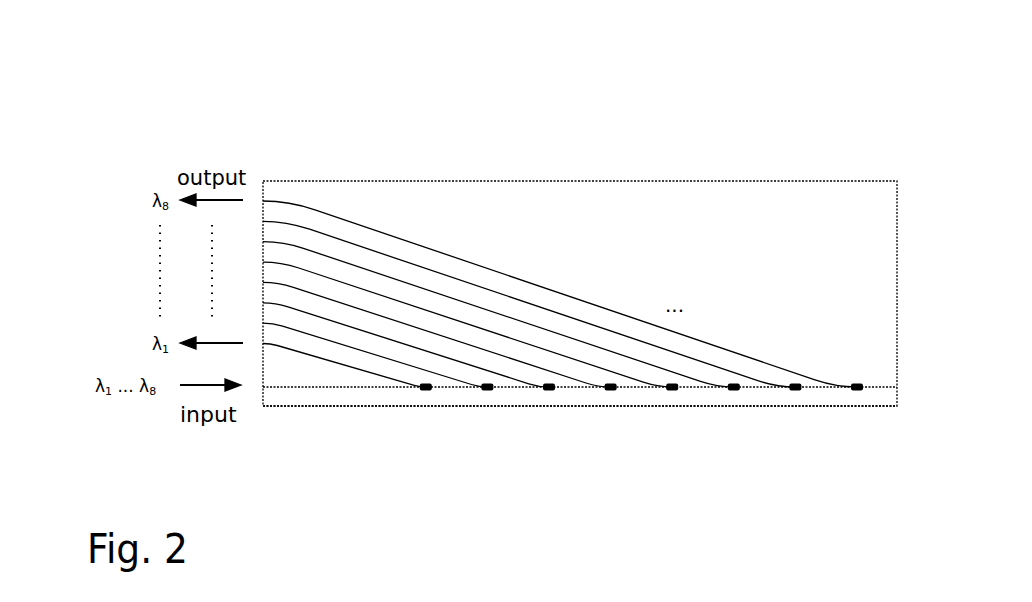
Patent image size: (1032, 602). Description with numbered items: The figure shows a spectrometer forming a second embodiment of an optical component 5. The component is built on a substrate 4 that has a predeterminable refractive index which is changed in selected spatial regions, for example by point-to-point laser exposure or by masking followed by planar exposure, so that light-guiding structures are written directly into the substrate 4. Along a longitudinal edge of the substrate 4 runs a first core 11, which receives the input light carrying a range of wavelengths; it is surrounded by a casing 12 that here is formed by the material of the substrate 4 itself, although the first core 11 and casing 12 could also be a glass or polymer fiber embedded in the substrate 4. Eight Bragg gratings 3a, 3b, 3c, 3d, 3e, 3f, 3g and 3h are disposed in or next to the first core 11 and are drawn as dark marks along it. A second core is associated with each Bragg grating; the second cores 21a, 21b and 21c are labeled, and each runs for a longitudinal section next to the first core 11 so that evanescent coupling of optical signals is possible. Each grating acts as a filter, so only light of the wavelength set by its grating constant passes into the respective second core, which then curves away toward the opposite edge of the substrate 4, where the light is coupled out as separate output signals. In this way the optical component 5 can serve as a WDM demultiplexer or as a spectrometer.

The substrate 4 is at (798, 197).
The optical component 5 is at (420, 167).
The first core 11 is at (305, 387).
The casing 12 is at (363, 398).
The second core 21a is at (522, 282).
The second core 21b is at (560, 317).
The second core 21c is at (597, 350).
The Bragg grating 3a is at (857, 392).
The Bragg grating 3b is at (795, 392).
The Bragg grating 3c is at (734, 392).
The Bragg grating 3d is at (672, 392).
The Bragg grating 3e is at (610, 392).
The Bragg grating 3f is at (549, 392).
The Bragg grating 3g is at (487, 392).
The Bragg grating 3h is at (426, 392).